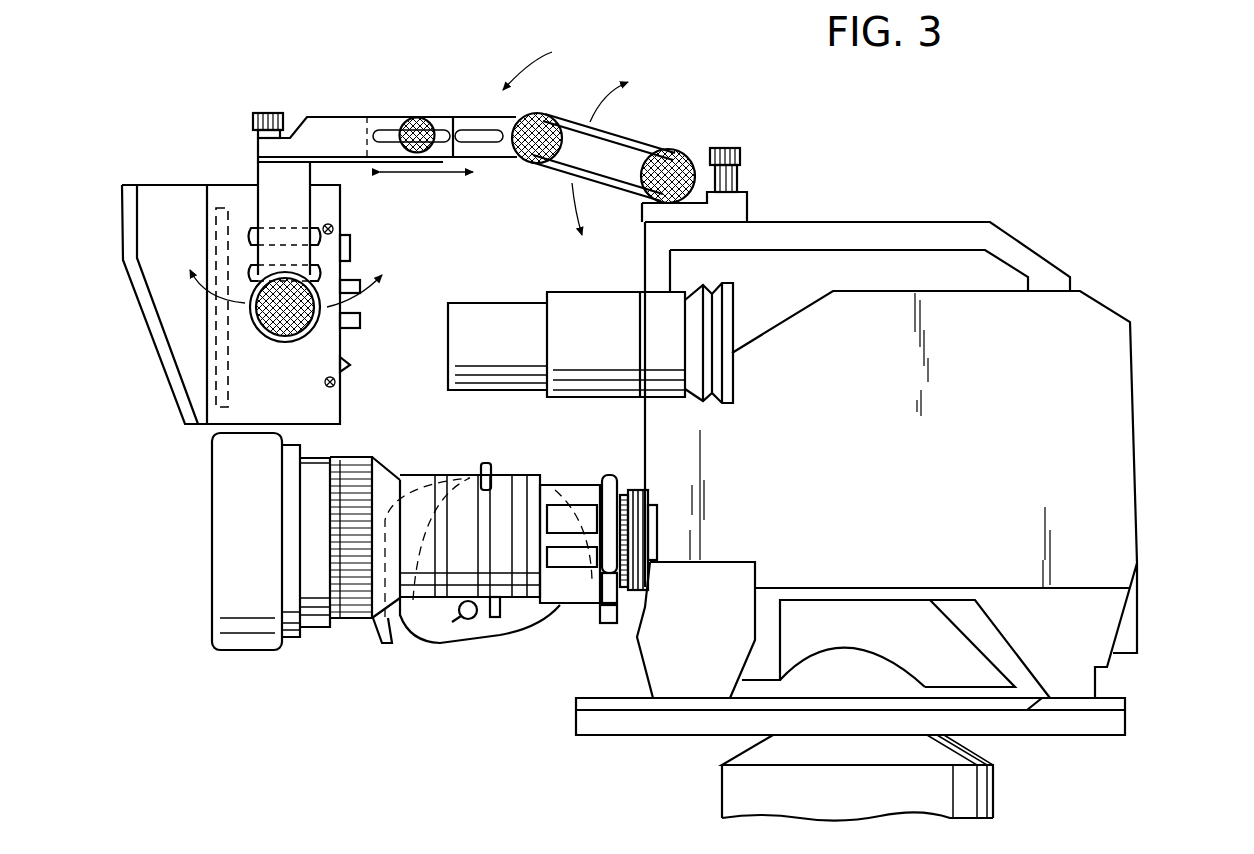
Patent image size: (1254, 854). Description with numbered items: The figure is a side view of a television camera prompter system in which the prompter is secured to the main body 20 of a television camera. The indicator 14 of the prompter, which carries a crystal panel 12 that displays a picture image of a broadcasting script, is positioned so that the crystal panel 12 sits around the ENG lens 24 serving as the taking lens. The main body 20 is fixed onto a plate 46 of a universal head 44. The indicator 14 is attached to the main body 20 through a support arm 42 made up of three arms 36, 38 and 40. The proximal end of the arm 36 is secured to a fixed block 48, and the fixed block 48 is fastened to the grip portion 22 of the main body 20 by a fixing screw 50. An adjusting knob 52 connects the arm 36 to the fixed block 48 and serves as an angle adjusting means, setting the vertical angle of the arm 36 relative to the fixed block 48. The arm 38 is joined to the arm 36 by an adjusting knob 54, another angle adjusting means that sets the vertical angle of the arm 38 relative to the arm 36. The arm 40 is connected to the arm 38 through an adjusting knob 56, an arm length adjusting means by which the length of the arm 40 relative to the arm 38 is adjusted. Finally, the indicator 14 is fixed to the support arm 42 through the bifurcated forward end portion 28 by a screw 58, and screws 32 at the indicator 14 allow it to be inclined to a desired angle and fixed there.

The crystal panel 12 is at (220, 205).
The indicator 14 is at (230, 183).
The main body 20 is at (1090, 387).
The grip portion 22 is at (833, 232).
The ENG lens 24 is at (348, 630).
The bifurcated forward end portion 28 is at (293, 210).
The screws 32 is at (300, 327).
The arm 36 is at (617, 152).
The arm 38 is at (473, 120).
The arm 40 is at (350, 130).
The support arm 42 is at (549, 125).
The universal head 44 is at (750, 793).
The plate 46 is at (630, 736).
The fixed block 48 is at (735, 207).
The fixing screw 50 is at (743, 153).
The adjusting knob 52 is at (672, 170).
The adjusting knob 54 is at (547, 117).
The adjusting knob 56 is at (413, 120).
The screw 58 is at (270, 110).